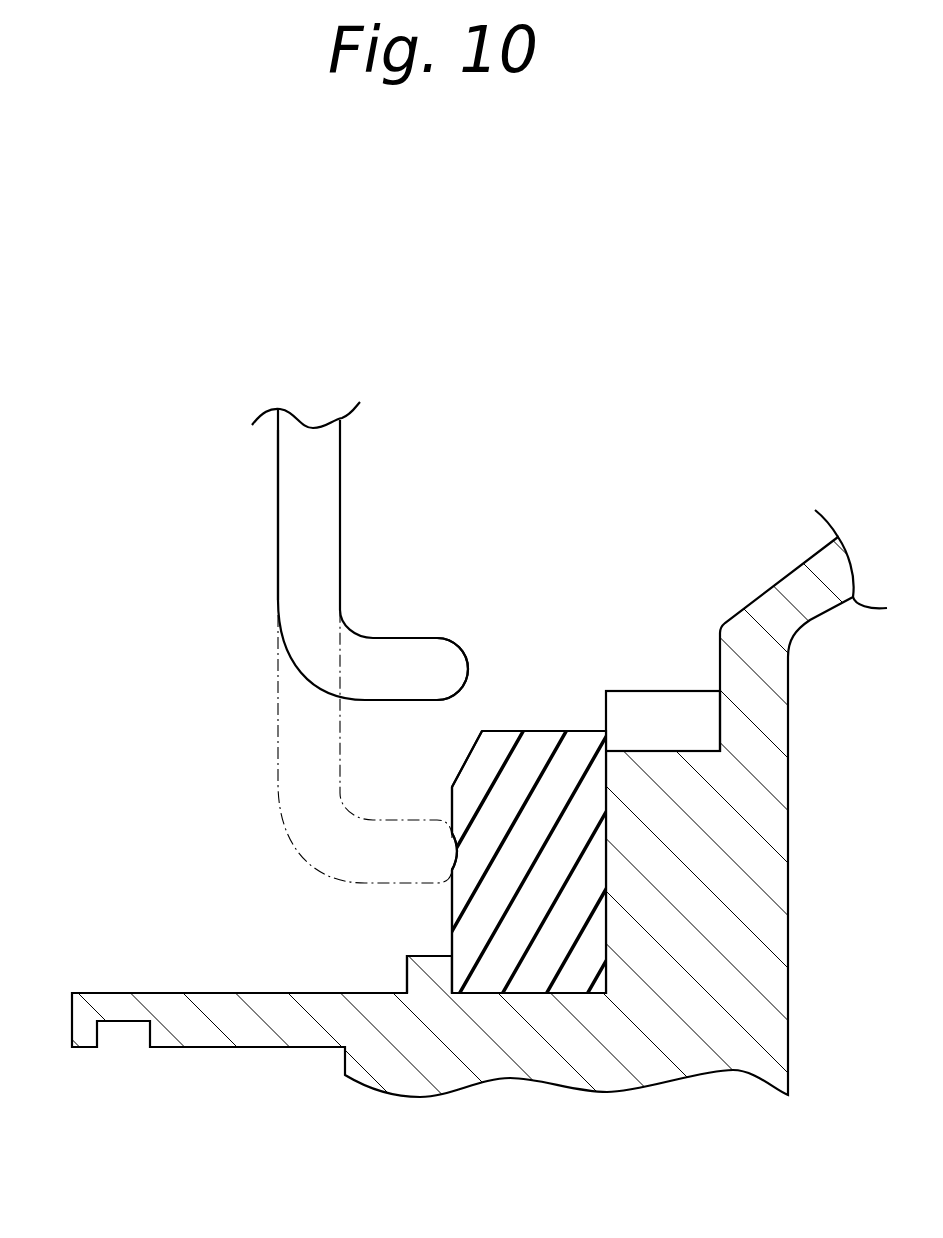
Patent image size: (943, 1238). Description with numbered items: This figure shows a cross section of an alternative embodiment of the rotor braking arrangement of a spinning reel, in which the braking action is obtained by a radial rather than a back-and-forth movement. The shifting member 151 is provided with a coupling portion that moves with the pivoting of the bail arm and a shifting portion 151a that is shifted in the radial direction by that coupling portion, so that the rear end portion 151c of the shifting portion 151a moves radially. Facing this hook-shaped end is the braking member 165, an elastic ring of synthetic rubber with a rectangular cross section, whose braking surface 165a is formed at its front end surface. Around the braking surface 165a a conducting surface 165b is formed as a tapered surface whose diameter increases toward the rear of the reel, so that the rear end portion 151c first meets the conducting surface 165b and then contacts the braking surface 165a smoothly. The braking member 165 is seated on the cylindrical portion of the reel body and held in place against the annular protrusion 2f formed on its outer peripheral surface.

The shifting member 151 is at (305, 473).
The shifting portion 151a is at (298, 553).
The rear end portion 151c is at (380, 665).
The braking member 165 is at (566, 758).
The braking surface 165a is at (452, 918).
The conducting surface 165b is at (463, 750).
The annular protrusion 2f is at (433, 973).